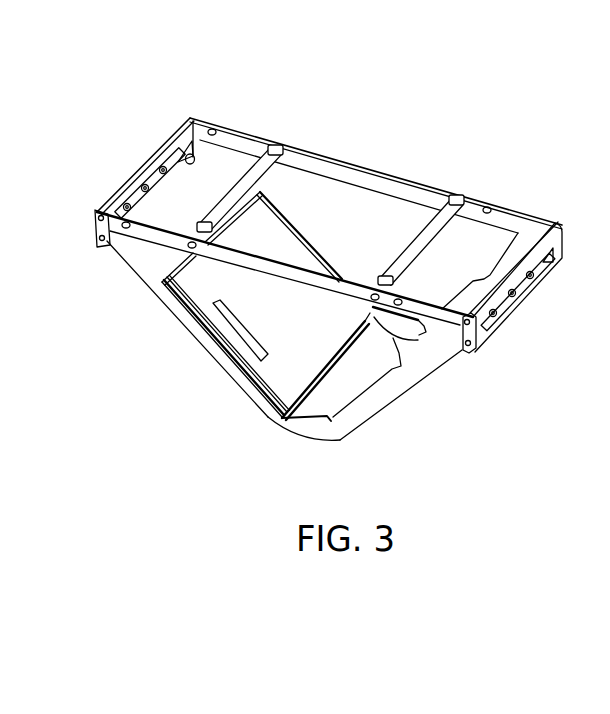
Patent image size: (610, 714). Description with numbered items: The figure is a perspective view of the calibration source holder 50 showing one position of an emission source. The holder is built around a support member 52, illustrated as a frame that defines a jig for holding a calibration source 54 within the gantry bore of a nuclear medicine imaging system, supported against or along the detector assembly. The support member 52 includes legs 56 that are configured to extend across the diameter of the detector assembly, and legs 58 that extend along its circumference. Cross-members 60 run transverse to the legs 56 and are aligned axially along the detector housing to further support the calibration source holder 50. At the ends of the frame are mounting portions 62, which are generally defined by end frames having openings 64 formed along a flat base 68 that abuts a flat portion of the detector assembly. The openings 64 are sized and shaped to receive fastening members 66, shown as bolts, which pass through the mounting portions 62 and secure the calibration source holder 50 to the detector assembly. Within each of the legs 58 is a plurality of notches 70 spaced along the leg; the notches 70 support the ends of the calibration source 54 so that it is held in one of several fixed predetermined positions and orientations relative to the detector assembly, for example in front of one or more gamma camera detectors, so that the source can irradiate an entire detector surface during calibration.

The calibration source holder 50 is at (386, 101).
The support member 52 is at (388, 405).
The calibration source 54 is at (207, 289).
The legs 56 is at (387, 173).
The legs 58 is at (312, 426).
The cross-members 60 is at (223, 206).
The mounting portions 62 is at (113, 157).
The openings 64 is at (504, 353).
The fastening members 66 is at (533, 279).
The flat base 68 is at (100, 244).
The notches 70 is at (426, 334).